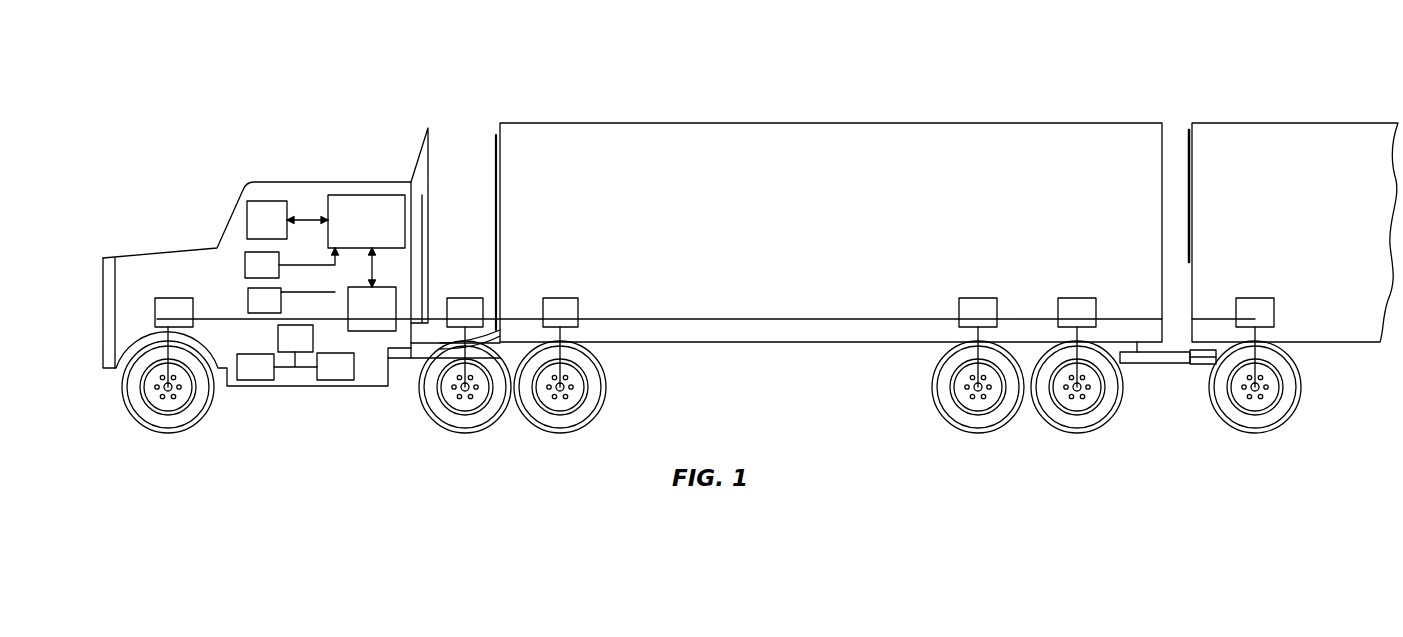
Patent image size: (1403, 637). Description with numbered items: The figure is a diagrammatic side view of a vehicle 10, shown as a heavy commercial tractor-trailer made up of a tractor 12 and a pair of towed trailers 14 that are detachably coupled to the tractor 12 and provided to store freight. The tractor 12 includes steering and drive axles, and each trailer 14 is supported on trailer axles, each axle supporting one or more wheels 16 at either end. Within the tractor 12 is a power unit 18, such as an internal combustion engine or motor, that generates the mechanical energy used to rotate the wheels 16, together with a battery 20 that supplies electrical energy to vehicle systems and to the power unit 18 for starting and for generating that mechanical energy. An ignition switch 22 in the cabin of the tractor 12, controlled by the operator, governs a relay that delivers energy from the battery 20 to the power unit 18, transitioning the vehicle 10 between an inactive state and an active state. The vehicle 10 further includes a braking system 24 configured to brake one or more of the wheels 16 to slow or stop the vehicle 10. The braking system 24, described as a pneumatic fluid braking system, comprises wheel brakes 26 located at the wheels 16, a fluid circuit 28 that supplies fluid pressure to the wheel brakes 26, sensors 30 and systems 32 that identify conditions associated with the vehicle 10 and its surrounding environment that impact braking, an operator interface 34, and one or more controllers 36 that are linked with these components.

The vehicle 10 is at (248, 148).
The tractor 12 is at (137, 257).
The trailer 14 is at (613, 143).
The wheel 16 is at (148, 408).
The power unit 18 is at (335, 373).
The battery 20 is at (262, 373).
The ignition switch 22 is at (290, 338).
The braking system 24 is at (452, 232).
The wheel brake 26 is at (170, 302).
The fluid circuit 28 is at (376, 345).
The sensor 30 is at (253, 263).
The system 32 is at (253, 300).
The operator interface 34 is at (270, 220).
The controller 36 is at (365, 217).